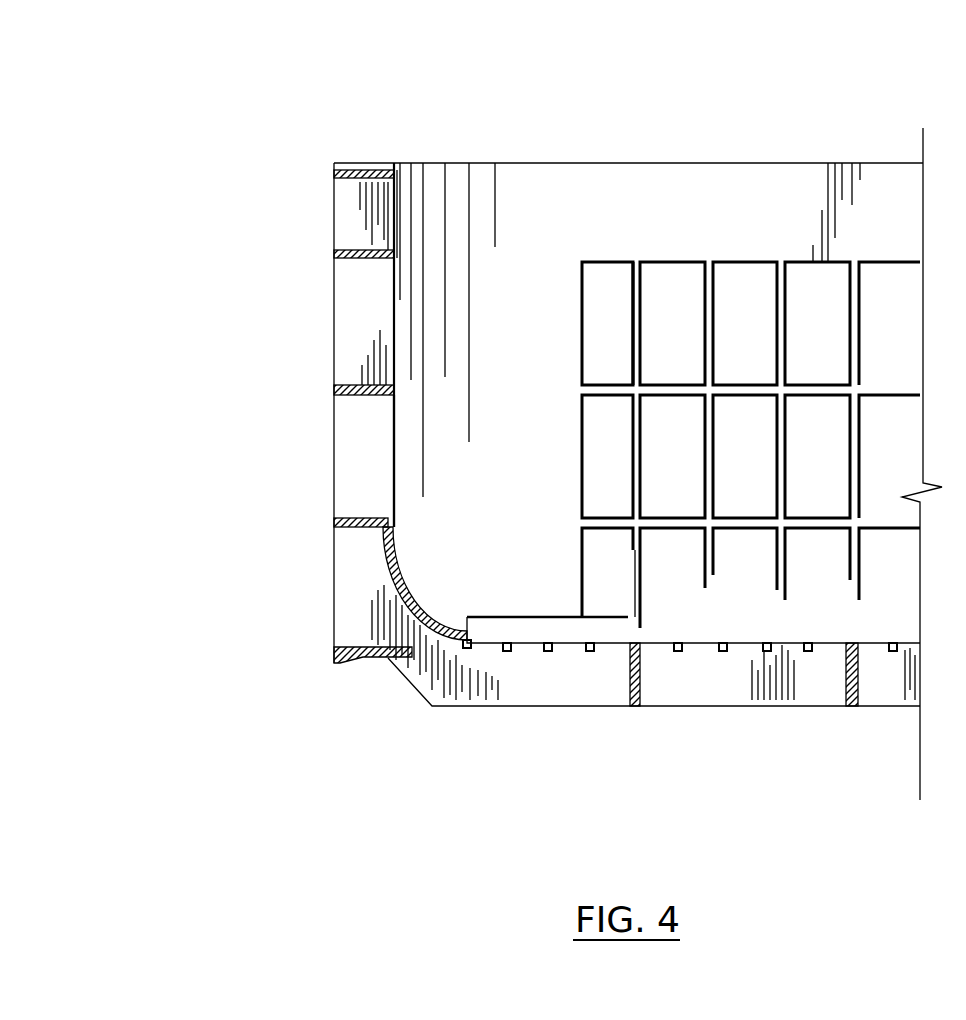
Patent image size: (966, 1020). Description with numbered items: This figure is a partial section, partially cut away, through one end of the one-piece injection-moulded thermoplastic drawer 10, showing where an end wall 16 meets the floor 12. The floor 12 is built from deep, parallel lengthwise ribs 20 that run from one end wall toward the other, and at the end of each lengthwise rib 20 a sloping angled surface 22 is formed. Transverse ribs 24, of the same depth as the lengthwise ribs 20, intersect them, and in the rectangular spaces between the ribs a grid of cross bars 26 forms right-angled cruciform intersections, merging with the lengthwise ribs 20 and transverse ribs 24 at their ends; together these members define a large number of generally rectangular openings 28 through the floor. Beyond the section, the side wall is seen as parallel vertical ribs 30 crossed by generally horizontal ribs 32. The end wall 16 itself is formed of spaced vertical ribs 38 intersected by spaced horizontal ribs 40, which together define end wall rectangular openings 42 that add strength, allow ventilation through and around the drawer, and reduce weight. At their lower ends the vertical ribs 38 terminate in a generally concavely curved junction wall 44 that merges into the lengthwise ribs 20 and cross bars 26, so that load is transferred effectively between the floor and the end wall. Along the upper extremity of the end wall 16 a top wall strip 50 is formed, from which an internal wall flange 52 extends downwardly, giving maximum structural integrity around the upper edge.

The drawer 10 is at (560, 150).
The floor 12 is at (725, 728).
The end walls 16 is at (317, 325).
The lengthwise ribs 20 is at (813, 685).
The sloping angled surfaces 22 is at (410, 672).
The transverse ribs 24 is at (640, 672).
The cross bars 26 is at (548, 652).
The rectangular openings 28 is at (747, 652).
The vertical ribs 30 is at (642, 423).
The horizontal ribs 32 is at (668, 385).
The vertical ribs 38 is at (385, 472).
The horizontal ribs 40 is at (363, 383).
The end wall rectangular openings 42 is at (365, 435).
The concavely curved junction wall 44 is at (405, 580).
The top wall strips 50 is at (377, 170).
The internal wall flanges 52 is at (380, 216).